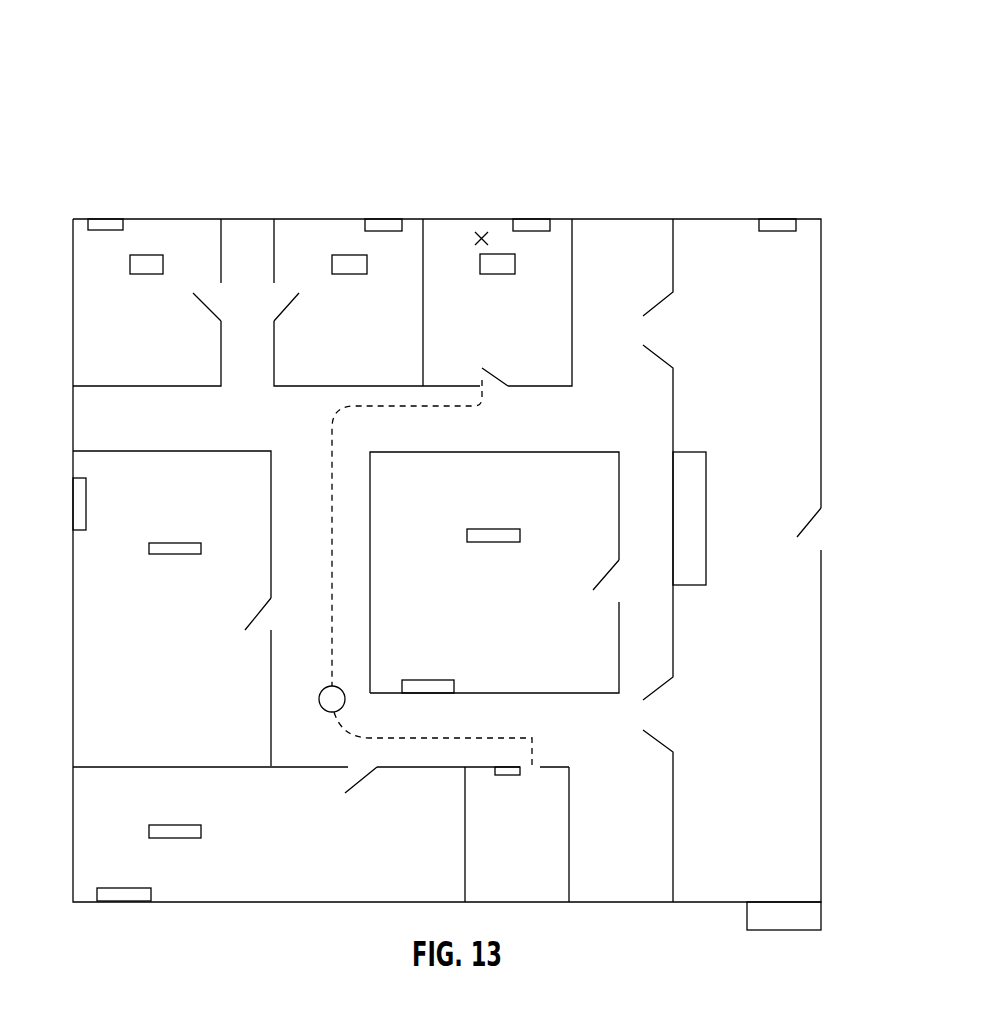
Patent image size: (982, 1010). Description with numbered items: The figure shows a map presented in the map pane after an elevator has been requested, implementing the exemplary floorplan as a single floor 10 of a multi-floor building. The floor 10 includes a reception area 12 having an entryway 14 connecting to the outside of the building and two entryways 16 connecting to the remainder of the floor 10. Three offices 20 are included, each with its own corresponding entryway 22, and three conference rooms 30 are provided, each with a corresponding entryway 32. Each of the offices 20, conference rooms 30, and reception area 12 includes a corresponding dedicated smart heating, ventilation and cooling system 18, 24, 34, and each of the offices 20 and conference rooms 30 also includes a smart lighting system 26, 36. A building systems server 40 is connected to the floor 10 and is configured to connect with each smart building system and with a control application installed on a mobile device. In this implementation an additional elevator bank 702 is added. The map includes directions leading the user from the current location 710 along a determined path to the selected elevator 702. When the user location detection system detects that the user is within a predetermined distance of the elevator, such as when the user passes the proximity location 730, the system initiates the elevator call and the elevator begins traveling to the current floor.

The floor 10 is at (221, 85).
The reception area 12 is at (790, 428).
The entryway 14 is at (820, 528).
The entryways 16 is at (663, 330).
The smart heating, ventilation and cooling (HVAC) system 18 is at (782, 217).
The offices 20 is at (157, 302).
The entryway 22 is at (223, 297).
The smart heating, ventilation and cooling (HVAC) system 24 is at (105, 218).
The smart lighting system 26 is at (153, 255).
The conference rooms 30 is at (185, 604).
The entryway 32 is at (263, 625).
The smart heating, ventilation and cooling (HVAC) system 34 is at (72, 502).
The smart lighting system 36 is at (173, 542).
The building systems server 40 is at (777, 920).
The elevator bank 702 is at (533, 841).
The current location 710 is at (480, 233).
The proximity location 730 is at (333, 463).